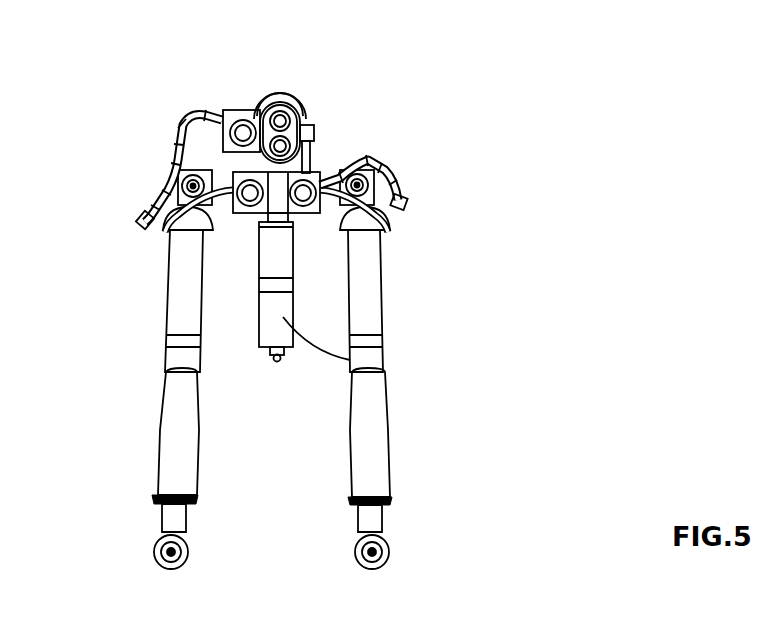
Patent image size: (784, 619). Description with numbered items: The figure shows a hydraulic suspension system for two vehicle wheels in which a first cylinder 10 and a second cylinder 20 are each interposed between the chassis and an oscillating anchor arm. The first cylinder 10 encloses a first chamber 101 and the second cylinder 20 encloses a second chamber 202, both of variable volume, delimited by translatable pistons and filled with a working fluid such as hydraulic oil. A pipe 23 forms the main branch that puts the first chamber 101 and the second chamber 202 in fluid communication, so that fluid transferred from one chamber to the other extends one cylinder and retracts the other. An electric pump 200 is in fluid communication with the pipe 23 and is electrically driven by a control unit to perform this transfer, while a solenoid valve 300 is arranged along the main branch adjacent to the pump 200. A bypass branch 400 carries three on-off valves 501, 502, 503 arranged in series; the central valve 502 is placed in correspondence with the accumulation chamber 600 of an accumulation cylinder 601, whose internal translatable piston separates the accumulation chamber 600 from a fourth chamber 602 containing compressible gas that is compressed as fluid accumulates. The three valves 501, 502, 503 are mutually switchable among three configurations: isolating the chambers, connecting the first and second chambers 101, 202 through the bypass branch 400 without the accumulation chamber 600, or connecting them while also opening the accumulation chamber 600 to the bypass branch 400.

The first cylinder 10 is at (153, 477).
The second cylinder 20 is at (390, 473).
The pipe 23 is at (190, 108).
The first chamber 101 is at (167, 288).
The second chamber 202 is at (377, 287).
The electric pump 200 is at (300, 95).
The solenoid valve 300 is at (225, 112).
The bypass branch 400 is at (163, 227).
The first on-off valve 501 is at (243, 210).
The central valve 502 is at (278, 190).
The third on-off valve 503 is at (307, 210).
The accumulation chamber 600 is at (268, 258).
The accumulation cylinder 601 is at (350, 360).
The fourth chamber 602 is at (277, 360).